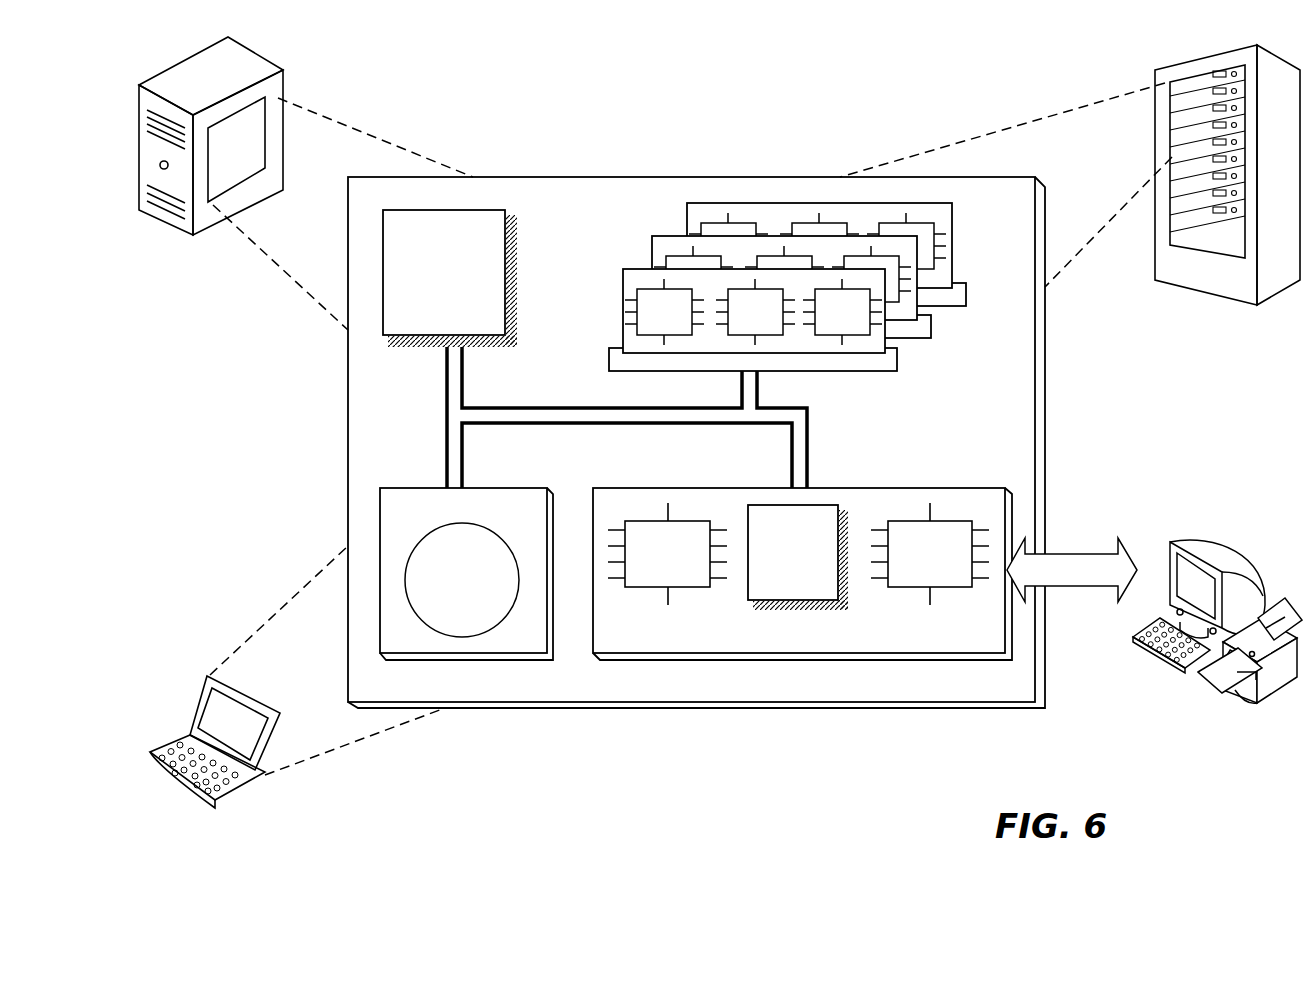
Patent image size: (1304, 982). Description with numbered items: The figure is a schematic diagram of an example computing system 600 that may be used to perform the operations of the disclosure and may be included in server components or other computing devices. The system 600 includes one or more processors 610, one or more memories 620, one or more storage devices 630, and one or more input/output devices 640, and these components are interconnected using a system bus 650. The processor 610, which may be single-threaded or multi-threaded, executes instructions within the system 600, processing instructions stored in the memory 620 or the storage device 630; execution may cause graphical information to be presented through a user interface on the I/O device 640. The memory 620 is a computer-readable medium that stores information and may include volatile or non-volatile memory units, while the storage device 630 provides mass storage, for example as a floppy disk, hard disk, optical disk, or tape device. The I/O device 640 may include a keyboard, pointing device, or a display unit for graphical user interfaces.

The computing system 600 is at (528, 100).
The processor 610 is at (450, 278).
The memory 620 is at (958, 338).
The storage device 630 is at (466, 574).
The input/output (I/O) device 640 is at (1168, 548).
The system bus 650 is at (622, 421).